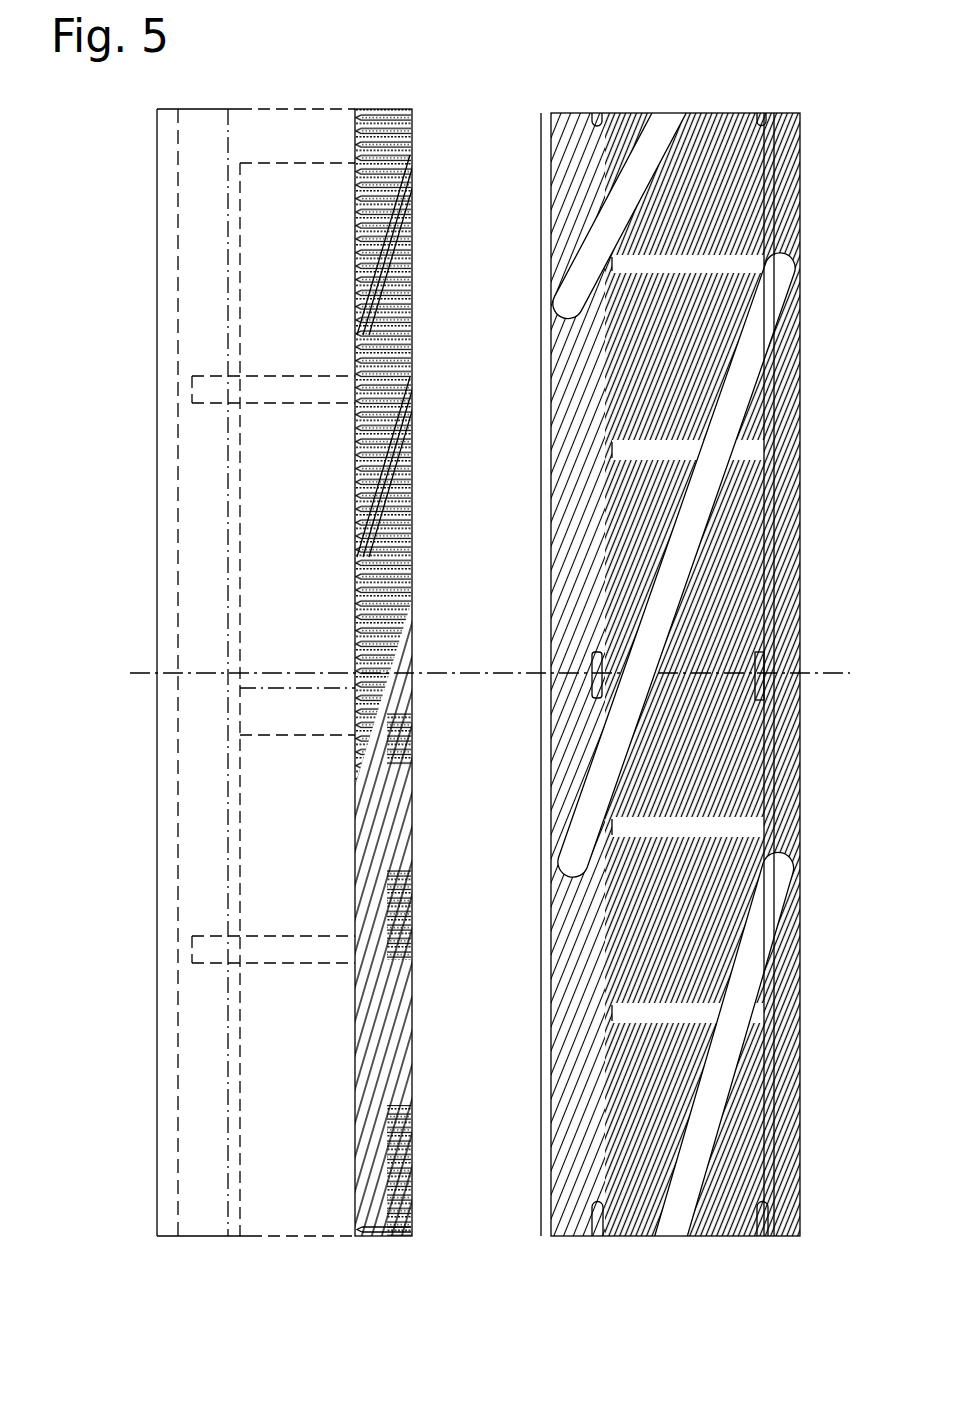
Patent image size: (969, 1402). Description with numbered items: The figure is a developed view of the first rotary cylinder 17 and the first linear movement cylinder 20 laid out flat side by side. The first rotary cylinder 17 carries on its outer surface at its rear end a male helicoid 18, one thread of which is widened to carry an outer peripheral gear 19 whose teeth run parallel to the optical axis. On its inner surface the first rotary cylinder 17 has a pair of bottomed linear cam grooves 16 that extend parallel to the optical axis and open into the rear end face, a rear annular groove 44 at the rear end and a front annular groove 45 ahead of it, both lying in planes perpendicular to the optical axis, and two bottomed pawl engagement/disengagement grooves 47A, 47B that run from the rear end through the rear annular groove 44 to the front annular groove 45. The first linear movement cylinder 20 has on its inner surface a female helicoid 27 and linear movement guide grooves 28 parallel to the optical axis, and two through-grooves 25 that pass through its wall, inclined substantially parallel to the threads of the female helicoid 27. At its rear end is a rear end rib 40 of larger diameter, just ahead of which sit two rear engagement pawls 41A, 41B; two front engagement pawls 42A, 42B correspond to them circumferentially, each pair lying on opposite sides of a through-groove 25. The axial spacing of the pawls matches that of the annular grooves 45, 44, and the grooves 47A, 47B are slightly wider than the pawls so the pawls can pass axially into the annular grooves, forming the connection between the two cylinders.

The linear cam groove 16 is at (292, 403).
The first rotary cylinder 17 is at (157, 154).
The male helicoid 18 is at (358, 1113).
The outer peripheral gear 19 is at (374, 1232).
The first linear movement cylinder 20 is at (540, 131).
The through-groove 25 is at (647, 145).
The female helicoid 27 is at (733, 115).
The linear movement guide groove 28 is at (768, 268).
The rear end rib 40 is at (796, 922).
The rear engagement pawl 41A is at (760, 113).
The rear engagement pawl 41B is at (762, 658).
The front engagement pawl 42A is at (597, 113).
The front engagement pawl 42B is at (595, 672).
The rear annular groove 44 is at (400, 1088).
The front annular groove 45 is at (242, 1187).
The pawl engagement/disengagement groove 47A is at (284, 164).
The pawl engagement/disengagement groove 47B is at (284, 738).